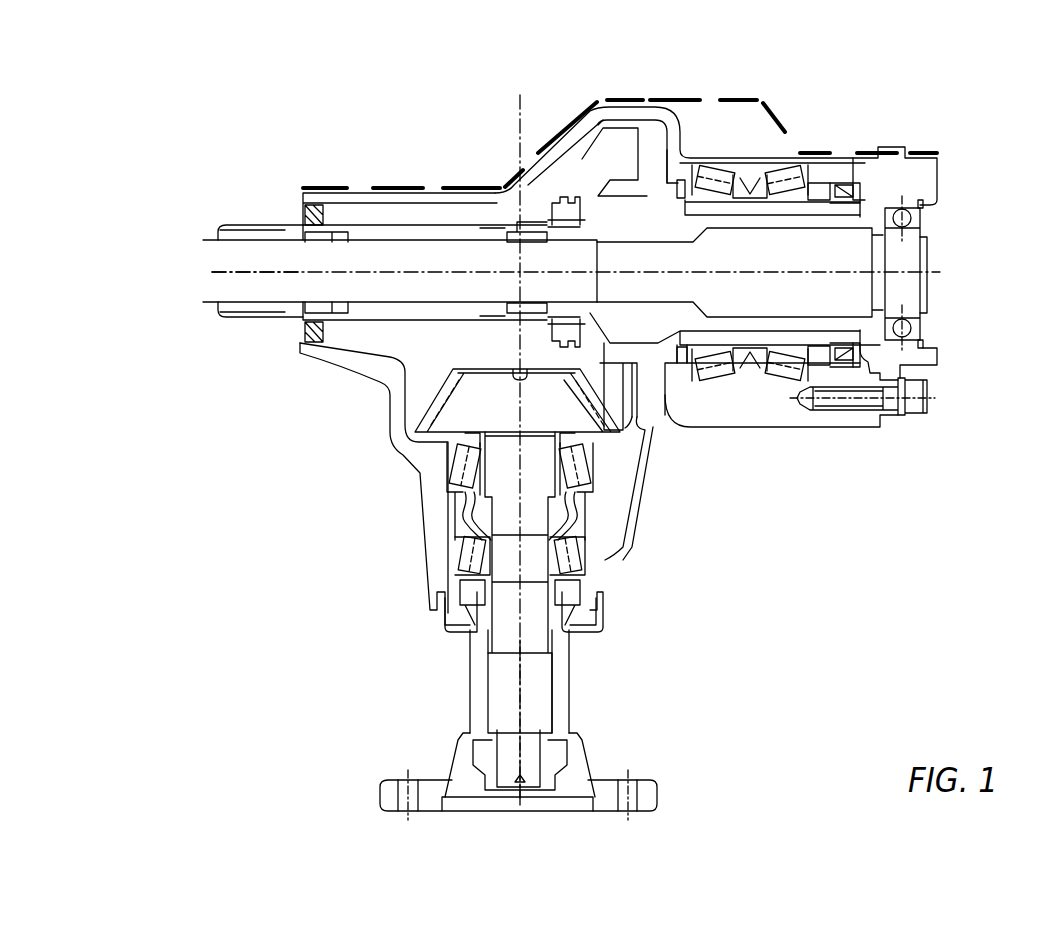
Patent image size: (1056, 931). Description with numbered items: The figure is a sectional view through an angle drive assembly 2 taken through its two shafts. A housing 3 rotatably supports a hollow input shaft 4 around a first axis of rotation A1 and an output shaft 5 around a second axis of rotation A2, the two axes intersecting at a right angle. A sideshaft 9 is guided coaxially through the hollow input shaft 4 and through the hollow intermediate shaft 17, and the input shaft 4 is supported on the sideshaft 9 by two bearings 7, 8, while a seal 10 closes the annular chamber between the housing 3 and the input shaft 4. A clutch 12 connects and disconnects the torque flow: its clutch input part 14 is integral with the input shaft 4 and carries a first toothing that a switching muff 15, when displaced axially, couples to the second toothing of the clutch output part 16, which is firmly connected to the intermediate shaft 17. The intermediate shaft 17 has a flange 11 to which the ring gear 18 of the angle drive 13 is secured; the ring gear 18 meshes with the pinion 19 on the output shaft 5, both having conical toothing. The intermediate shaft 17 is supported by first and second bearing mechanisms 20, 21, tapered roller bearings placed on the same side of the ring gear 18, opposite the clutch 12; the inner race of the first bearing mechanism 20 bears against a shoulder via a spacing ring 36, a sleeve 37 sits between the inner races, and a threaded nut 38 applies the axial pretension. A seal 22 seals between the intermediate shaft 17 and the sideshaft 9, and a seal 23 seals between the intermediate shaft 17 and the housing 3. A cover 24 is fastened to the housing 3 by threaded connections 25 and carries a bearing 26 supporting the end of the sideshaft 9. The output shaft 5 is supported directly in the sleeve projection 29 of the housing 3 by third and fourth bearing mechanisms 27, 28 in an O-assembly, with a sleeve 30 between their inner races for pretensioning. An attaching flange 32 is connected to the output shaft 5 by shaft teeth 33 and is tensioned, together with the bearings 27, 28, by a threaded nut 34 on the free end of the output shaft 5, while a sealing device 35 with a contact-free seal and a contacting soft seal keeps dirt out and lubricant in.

The angle drive assembly 2 is at (220, 146).
The housing 3 is at (398, 200).
The input shaft 4 is at (370, 237).
The output shaft 5 is at (537, 642).
The bearing 7 is at (332, 237).
The bearing 8 is at (500, 237).
The sideshaft 9 is at (448, 258).
The seal 10 is at (307, 213).
The flange 11 is at (656, 145).
The clutch 12 is at (538, 183).
The angle drive 13 is at (640, 452).
The clutch input part 14 is at (532, 227).
The switching muff 15 is at (568, 213).
The clutch output part 16 is at (563, 233).
The intermediate shaft 17 is at (647, 193).
The ring gear 18 is at (615, 147).
The pinion 19 is at (457, 405).
The first bearing mechanism 20 is at (718, 173).
The second bearing mechanism 21 is at (792, 170).
The seal 22 is at (843, 223).
The seal 23 is at (842, 183).
The cover 24 is at (897, 362).
The threaded connections 25 is at (910, 420).
The bearing 26 is at (923, 216).
The third bearing mechanism 27 is at (453, 472).
The fourth bearing mechanism 28 is at (460, 558).
The sleeve projection 29 is at (428, 522).
The sleeve 30 is at (563, 517).
The attaching flange 32 is at (573, 747).
The shaft teeth 33 is at (488, 682).
The threaded nut 34 is at (487, 757).
The sealing device 35 is at (607, 615).
The spacing ring 36 is at (682, 197).
The sleeve 37 is at (750, 207).
The threaded nut 38 is at (820, 200).
The first axis of rotation A1 is at (242, 273).
The second axis of rotation A2 is at (520, 693).